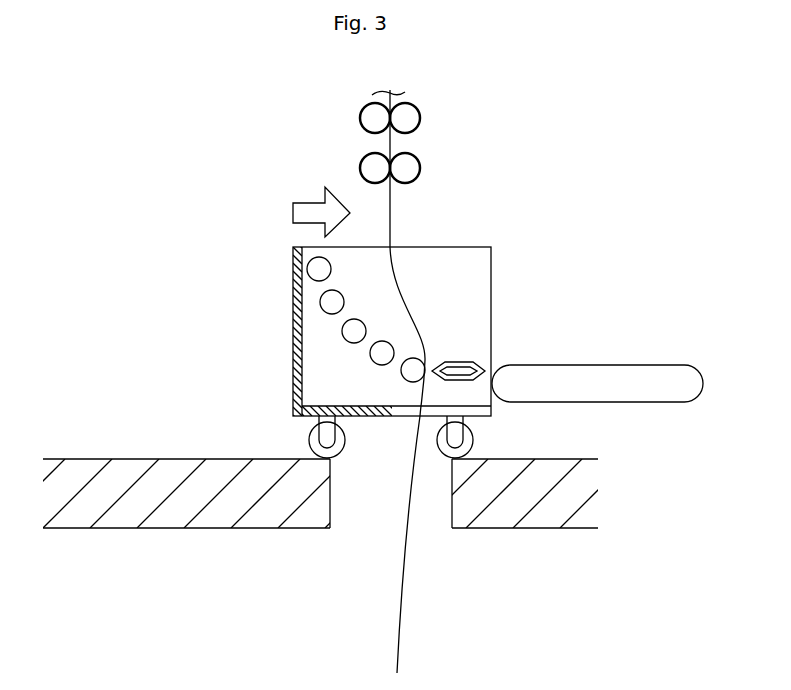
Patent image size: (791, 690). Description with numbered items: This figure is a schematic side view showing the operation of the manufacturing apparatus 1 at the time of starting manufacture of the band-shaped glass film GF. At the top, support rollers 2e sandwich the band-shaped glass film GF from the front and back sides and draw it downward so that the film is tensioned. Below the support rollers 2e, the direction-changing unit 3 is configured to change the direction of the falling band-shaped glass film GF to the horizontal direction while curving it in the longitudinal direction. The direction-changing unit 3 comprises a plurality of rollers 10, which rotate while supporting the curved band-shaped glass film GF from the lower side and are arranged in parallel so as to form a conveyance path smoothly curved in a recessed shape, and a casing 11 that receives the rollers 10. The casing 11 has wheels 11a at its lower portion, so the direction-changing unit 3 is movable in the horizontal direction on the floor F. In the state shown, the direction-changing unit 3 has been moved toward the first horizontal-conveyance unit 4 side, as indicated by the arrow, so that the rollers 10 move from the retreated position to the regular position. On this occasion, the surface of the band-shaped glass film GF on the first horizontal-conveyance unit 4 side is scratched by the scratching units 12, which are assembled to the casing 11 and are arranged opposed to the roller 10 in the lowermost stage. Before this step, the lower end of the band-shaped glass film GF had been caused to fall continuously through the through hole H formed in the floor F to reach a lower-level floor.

The glass fiber manufacturing apparatus 1 is at (461, 262).
The support rollers 2e is at (420, 114).
The band-shaped glass film GF is at (393, 222).
The direction-changing unit 3 is at (382, 348).
The casing 11 is at (292, 331).
The rollers 10 is at (325, 314).
The scratching units 12 is at (460, 362).
The first horizontal-conveyance unit 4 is at (653, 402).
The wheels 11a is at (308, 440).
The floor F is at (72, 459).
The through hole H is at (451, 506).